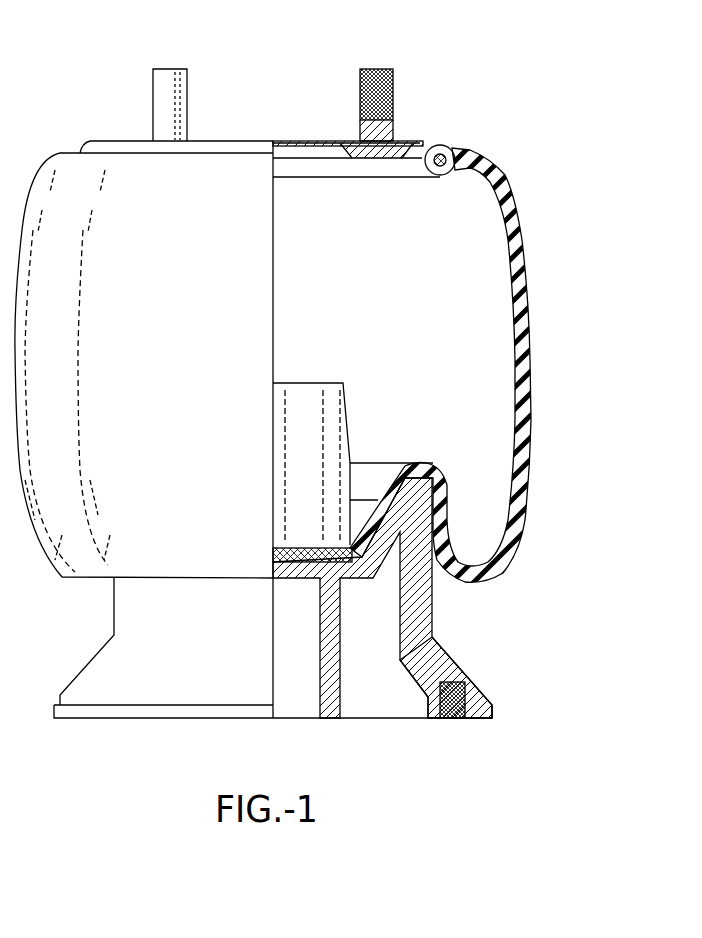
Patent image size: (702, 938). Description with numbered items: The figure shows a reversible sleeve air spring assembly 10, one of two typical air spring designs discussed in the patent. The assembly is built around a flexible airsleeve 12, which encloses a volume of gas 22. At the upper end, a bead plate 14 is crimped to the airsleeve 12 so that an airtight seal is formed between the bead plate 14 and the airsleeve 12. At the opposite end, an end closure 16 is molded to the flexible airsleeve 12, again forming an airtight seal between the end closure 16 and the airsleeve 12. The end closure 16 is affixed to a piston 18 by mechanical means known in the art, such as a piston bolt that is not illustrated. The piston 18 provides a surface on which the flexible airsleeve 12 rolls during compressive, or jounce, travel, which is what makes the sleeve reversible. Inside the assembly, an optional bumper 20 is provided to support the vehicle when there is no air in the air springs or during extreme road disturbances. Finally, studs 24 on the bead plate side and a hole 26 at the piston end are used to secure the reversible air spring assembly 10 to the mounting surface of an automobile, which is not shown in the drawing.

The reversible sleeve air spring assembly 10 is at (533, 165).
The flexible airsleeve 12 is at (528, 268).
The bead plate 14 is at (457, 150).
The end closure 16 is at (360, 552).
The piston 18 is at (447, 656).
The bumper 20 is at (343, 388).
The volume of gas 22 is at (483, 345).
The studs 24 is at (172, 88).
The hole 26 is at (452, 718).